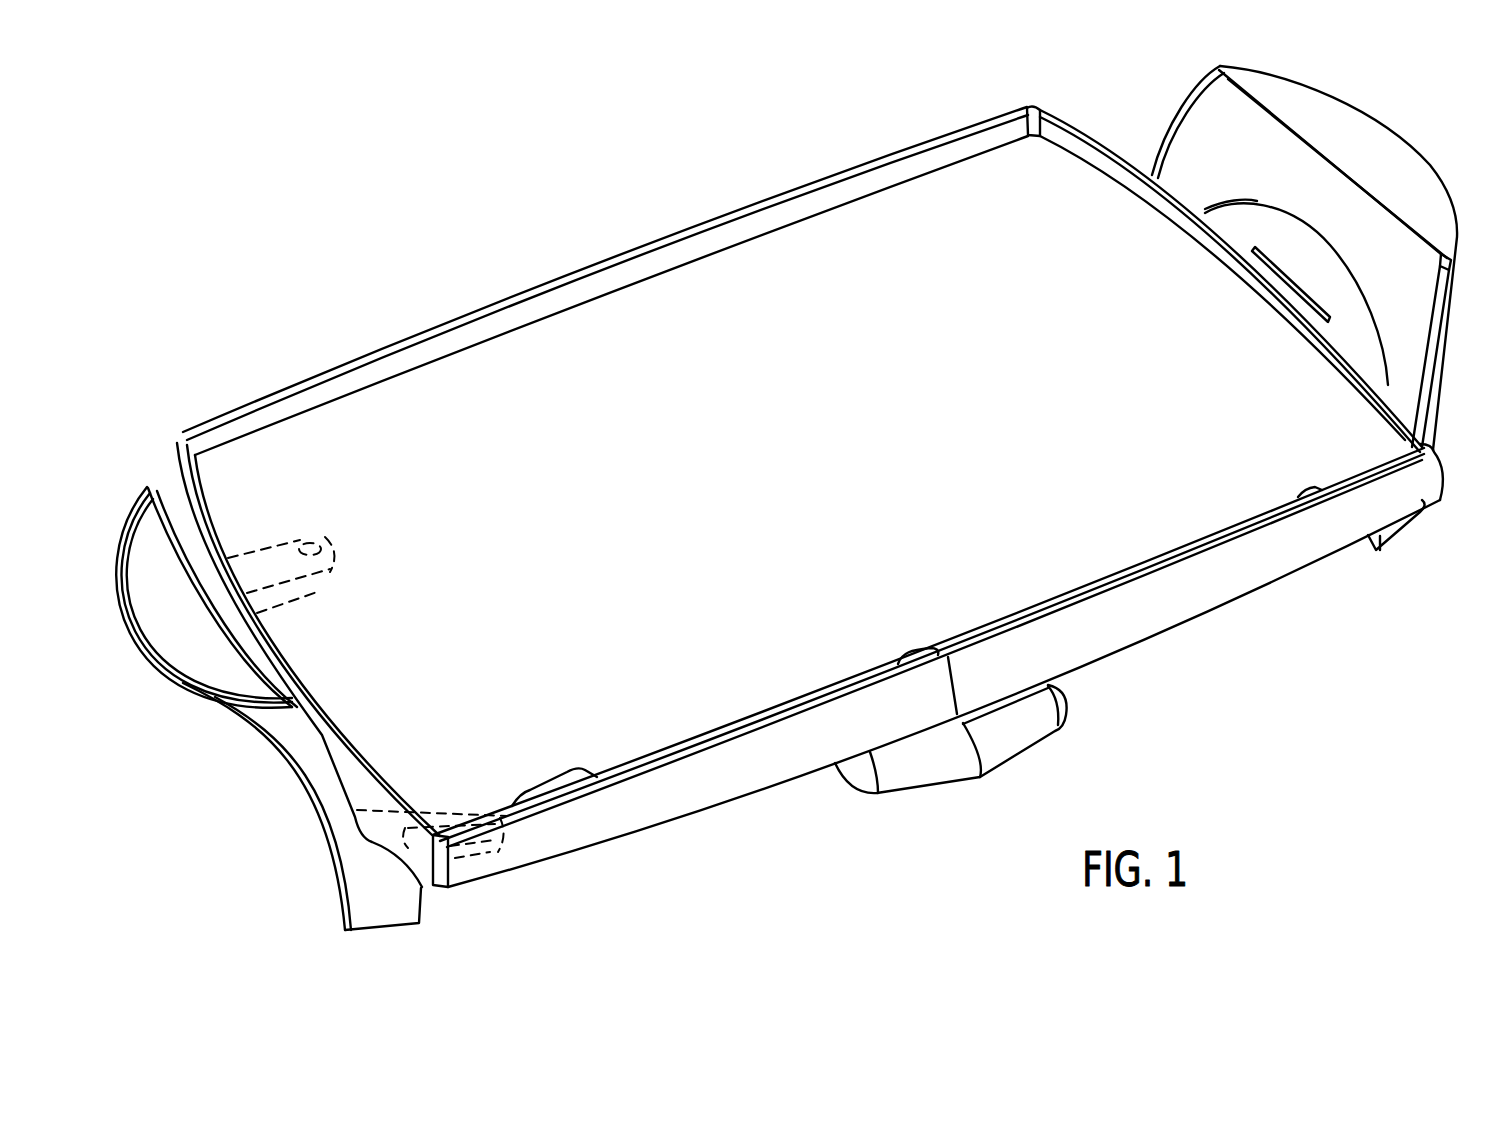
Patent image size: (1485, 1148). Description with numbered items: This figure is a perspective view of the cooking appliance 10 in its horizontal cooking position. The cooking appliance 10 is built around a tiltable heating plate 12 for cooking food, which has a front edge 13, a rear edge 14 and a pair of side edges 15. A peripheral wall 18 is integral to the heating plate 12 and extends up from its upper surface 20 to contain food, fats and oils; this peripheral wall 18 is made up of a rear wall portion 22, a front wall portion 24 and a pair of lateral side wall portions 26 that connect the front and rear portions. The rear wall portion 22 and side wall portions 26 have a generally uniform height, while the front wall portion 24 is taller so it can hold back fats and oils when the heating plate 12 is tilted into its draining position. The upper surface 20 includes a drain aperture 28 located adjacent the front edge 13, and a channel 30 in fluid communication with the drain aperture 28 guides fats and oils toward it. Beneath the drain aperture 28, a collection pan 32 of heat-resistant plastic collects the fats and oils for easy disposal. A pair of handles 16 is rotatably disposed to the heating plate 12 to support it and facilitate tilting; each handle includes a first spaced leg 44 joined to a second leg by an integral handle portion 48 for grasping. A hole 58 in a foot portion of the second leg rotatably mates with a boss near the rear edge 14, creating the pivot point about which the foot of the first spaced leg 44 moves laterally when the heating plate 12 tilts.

The cooking appliance 10 is at (630, 205).
The heating plate 12 is at (390, 400).
The front edge 13 is at (755, 775).
The rear edge 14 is at (165, 460).
The side edges 15 is at (420, 862).
The handles 16 is at (145, 487).
The peripheral wall 18 is at (823, 196).
The upper surface 20 is at (513, 365).
The rear wall portion 22 is at (902, 152).
The front wall portion 24 is at (1220, 553).
The lateral side wall portions 26 is at (1077, 135).
The drain aperture 28 is at (903, 653).
The channel 30 is at (590, 770).
The collection pan 32 is at (960, 780).
The first spaced leg 44 is at (355, 878).
The handle portion 48 is at (200, 662).
The hole 58 is at (303, 547).